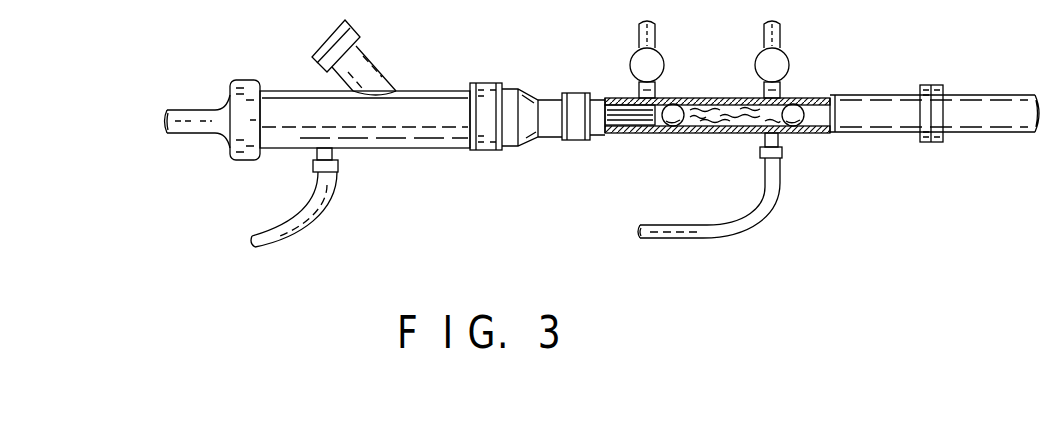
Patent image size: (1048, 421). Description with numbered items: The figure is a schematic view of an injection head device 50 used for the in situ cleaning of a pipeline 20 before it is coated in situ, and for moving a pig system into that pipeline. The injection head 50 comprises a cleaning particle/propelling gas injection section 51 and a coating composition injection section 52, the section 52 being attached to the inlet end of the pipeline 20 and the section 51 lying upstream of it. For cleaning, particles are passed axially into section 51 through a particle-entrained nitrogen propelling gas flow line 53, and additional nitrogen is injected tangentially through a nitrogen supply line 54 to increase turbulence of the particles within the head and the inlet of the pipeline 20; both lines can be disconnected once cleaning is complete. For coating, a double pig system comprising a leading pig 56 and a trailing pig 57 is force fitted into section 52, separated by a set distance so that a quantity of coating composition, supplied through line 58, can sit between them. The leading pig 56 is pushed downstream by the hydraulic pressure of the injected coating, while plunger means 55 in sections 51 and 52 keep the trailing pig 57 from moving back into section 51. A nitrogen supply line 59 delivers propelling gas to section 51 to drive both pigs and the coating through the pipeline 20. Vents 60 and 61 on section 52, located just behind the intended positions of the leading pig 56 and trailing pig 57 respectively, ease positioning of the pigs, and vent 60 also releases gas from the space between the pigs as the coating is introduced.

The pipeline 20 is at (973, 132).
The injection head device 50 is at (537, 137).
The cleaning particle/propelling gas injection section 51 is at (430, 90).
The coating composition injection section 52 is at (712, 100).
The particle-entrained nitrogen propelling gas flow line 53 is at (198, 108).
The nitrogen supply line 54 is at (368, 52).
The plunger means 55 is at (662, 118).
The leading pig 56 is at (795, 118).
The trailing pig 57 is at (672, 118).
The coating composition supply line 58 is at (700, 227).
The nitrogen supply line 59 is at (320, 210).
The vent 60 is at (788, 55).
The vent 61 is at (632, 53).